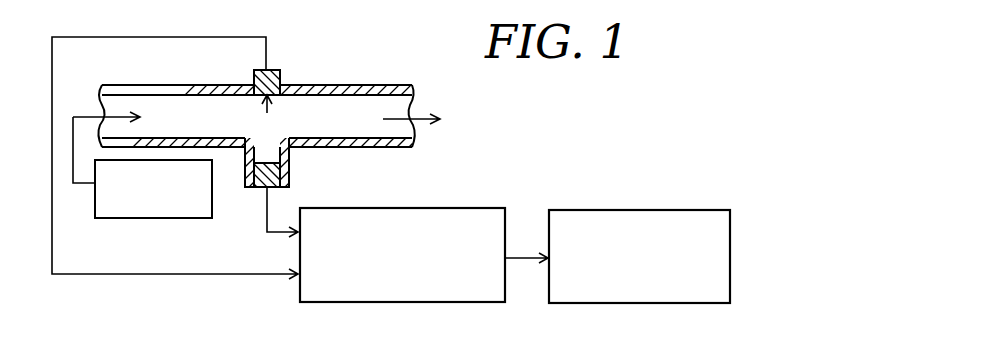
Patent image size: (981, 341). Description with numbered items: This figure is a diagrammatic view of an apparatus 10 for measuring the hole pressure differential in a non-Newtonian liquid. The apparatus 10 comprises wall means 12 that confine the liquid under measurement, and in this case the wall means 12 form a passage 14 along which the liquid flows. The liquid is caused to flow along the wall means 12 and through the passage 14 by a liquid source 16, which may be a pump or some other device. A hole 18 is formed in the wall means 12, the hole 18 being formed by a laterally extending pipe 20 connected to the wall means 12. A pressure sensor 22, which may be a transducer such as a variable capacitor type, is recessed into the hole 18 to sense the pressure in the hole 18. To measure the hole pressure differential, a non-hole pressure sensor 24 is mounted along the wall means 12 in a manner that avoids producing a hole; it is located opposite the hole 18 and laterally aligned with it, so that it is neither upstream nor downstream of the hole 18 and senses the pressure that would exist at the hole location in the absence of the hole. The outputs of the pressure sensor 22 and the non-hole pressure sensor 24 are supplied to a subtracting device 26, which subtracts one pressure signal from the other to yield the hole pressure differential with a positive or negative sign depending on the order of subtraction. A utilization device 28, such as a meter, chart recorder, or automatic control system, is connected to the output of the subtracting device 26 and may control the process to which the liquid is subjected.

The apparatus 10 is at (319, 116).
The wall means 12 is at (365, 148).
The passage 14 is at (397, 104).
The liquid source 16 is at (137, 213).
The hole 18 is at (273, 152).
The pipe 20 is at (290, 170).
The pressure sensor 22 is at (262, 188).
The non-hole pressure sensor 24 is at (276, 69).
The subtracting device 26 is at (418, 208).
The utilization device 28 is at (616, 210).